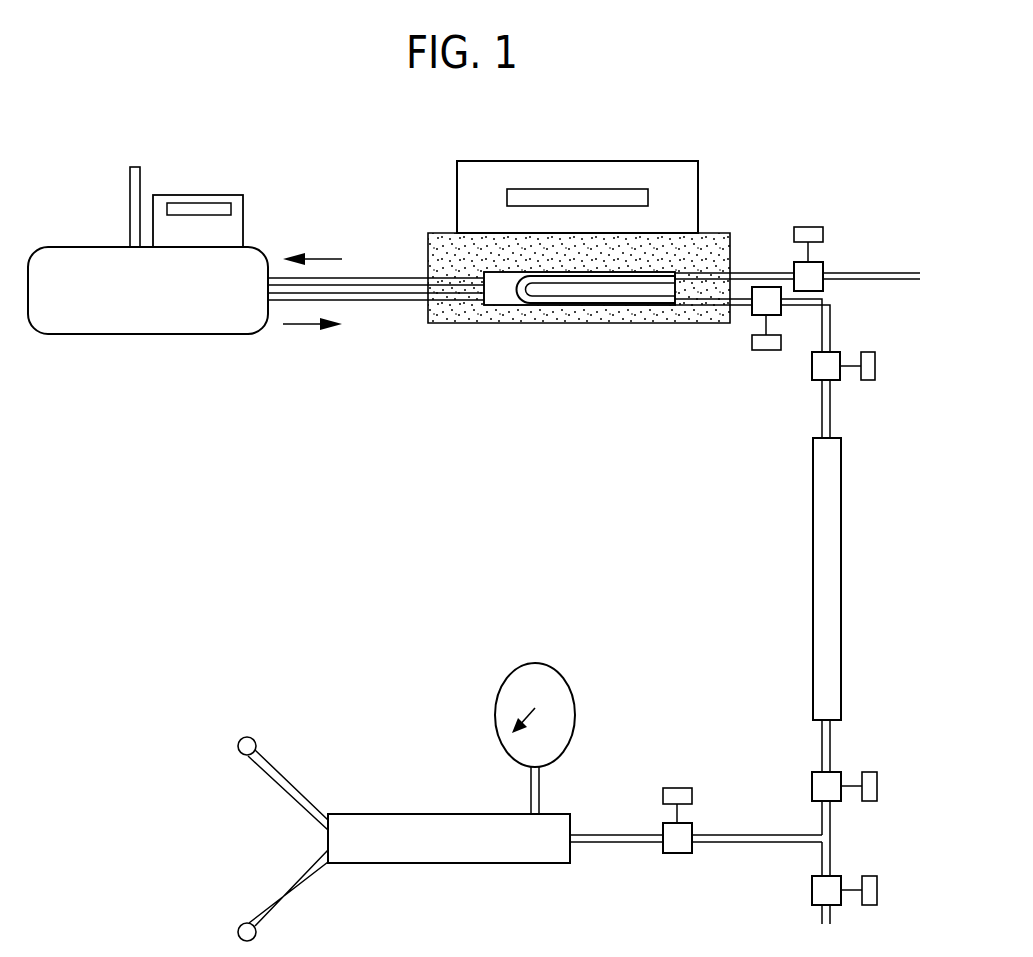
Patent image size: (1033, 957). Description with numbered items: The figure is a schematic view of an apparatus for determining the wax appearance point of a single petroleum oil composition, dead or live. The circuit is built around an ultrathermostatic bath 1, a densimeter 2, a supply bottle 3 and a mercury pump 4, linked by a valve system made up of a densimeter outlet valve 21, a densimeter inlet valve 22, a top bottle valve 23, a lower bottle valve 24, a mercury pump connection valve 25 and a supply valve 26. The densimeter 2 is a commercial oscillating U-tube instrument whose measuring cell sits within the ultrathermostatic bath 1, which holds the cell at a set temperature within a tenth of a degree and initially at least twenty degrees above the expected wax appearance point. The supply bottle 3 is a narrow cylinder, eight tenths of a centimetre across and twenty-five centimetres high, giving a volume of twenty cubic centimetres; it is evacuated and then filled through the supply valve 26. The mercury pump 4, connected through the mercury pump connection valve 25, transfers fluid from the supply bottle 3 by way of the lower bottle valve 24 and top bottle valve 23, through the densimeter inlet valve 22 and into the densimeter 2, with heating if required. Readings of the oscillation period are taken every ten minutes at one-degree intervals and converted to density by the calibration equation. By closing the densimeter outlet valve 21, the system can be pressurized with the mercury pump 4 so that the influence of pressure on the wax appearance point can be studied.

The ultrathermostatic bath 1 is at (120, 334).
The densimeter 2 is at (552, 324).
The supply bottle 3 is at (820, 566).
The mercury pump 4 is at (470, 847).
The densimeter outlet valve 21 is at (813, 232).
The densimeter inlet valve 22 is at (762, 345).
The top bottle valve 23 is at (877, 366).
The lower bottle valve 24 is at (878, 783).
The mercury pump connection valve 25 is at (680, 795).
The supply valve 26 is at (878, 887).